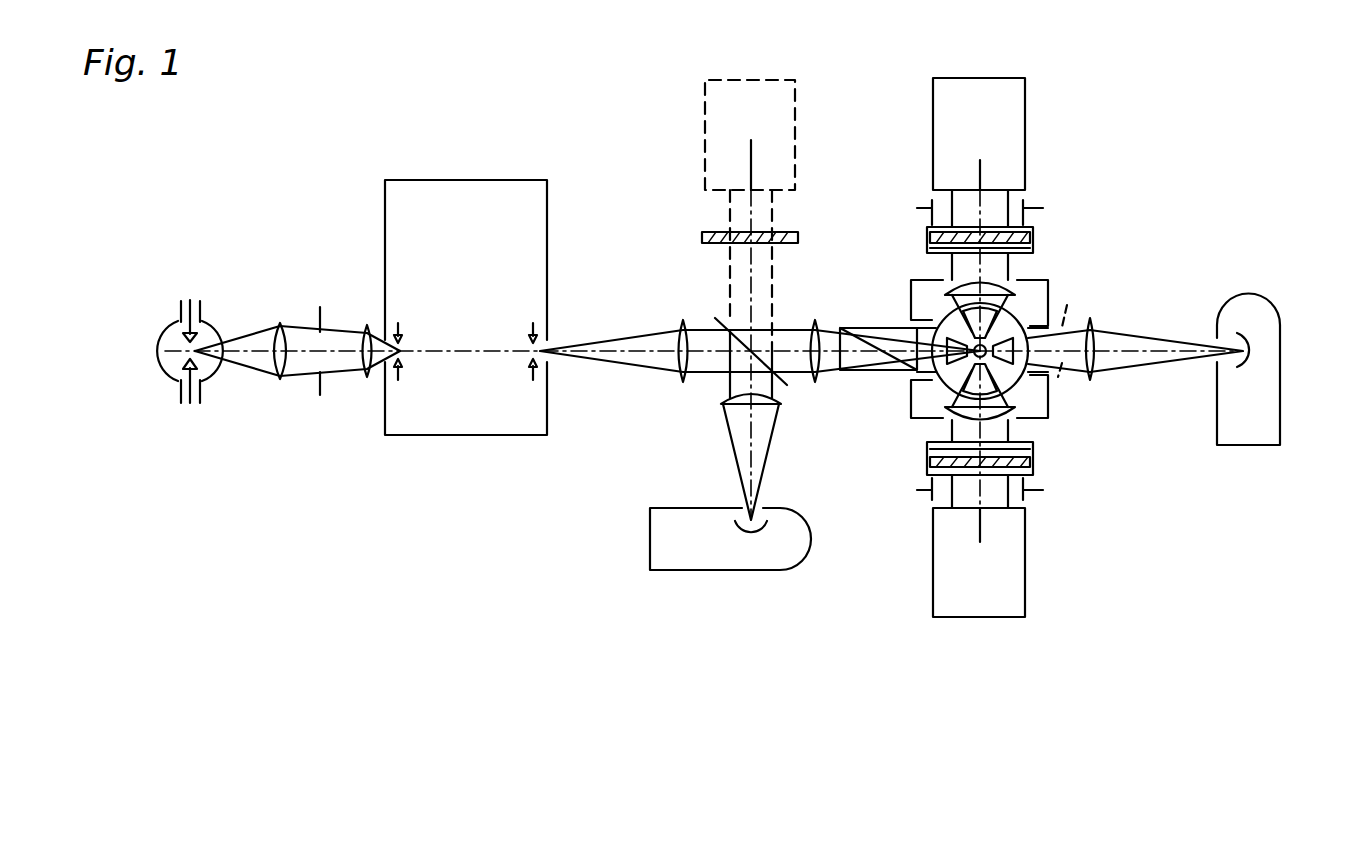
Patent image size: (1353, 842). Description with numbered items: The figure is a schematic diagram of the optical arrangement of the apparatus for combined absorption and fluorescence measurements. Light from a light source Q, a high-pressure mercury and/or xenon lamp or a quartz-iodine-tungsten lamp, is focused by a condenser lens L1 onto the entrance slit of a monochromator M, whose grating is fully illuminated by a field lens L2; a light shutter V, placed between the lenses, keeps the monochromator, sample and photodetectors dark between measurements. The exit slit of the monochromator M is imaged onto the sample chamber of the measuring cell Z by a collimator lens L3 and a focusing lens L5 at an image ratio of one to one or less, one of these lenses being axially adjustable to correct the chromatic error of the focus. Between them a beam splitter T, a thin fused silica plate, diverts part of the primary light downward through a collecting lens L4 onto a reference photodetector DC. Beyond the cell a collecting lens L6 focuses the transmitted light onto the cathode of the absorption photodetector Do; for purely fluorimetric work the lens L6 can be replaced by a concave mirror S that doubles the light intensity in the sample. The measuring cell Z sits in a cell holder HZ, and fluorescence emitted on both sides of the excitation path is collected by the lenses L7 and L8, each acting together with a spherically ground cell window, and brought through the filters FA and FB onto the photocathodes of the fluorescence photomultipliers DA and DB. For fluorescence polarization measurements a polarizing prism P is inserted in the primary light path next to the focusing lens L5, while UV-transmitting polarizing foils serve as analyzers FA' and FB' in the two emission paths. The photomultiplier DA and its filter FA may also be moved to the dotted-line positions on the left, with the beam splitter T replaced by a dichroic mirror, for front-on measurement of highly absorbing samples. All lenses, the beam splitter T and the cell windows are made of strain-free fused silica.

The light source Q is at (190, 333).
The condenser lens L1 is at (271, 326).
The light shutter V is at (313, 334).
The field lens L2 is at (360, 325).
The monochromator M is at (466, 288).
The collimator lens L3 is at (668, 327).
The beam splitter T is at (719, 316).
The collecting lens L4 is at (736, 406).
The focusing lens L5 is at (809, 327).
The reference photodetector DC is at (730, 561).
The fluorescence photomultiplier DA is at (1003, 134).
The filter FA is at (1014, 222).
The analyzer FA' is at (895, 211).
The lens L7 is at (958, 284).
The cell holder HZ is at (1034, 284).
The measuring cell Z is at (1003, 368).
The concave mirror S is at (1068, 324).
The collecting lens L6 is at (1095, 323).
The absorption photodetector Do is at (1244, 347).
The polarizing prism P is at (882, 368).
The lens L8 is at (950, 411).
The filter FB is at (1010, 477).
The analyzer FB' is at (897, 483).
The fluorescence photomultiplier DB is at (1004, 562).